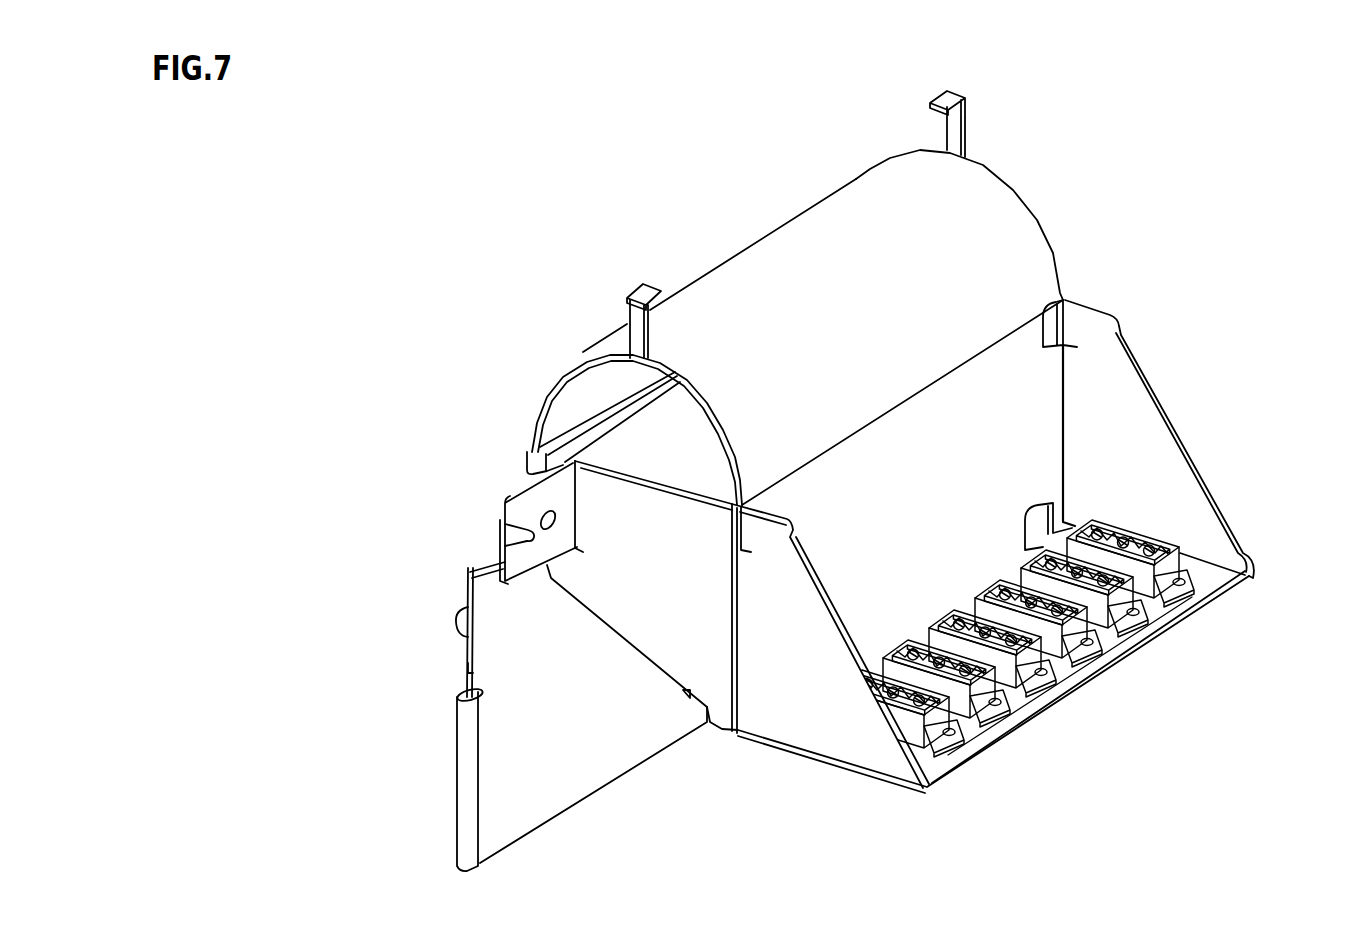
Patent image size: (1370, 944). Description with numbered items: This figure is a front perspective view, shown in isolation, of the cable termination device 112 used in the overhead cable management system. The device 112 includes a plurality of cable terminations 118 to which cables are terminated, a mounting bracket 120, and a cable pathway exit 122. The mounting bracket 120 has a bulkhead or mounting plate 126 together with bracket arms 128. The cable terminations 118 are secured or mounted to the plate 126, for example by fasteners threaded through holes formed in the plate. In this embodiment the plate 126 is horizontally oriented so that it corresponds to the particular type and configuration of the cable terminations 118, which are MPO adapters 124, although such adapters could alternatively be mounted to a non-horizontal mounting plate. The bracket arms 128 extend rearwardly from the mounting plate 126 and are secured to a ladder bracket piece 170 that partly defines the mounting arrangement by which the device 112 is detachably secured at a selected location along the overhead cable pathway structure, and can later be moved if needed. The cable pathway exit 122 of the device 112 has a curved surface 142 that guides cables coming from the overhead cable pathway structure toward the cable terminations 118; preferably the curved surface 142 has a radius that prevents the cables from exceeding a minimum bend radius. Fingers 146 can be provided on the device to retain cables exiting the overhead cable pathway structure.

The cable termination device 112 is at (470, 272).
The cable terminations 118 is at (1140, 418).
The mounting bracket 120 is at (751, 778).
The cable pathway exit 122 is at (988, 210).
The MPO adapters 124 is at (1050, 673).
The mounting plate 126 is at (1220, 586).
The bracket arms 128 is at (633, 620).
The curved surface 142 is at (862, 195).
The fingers 146 is at (633, 318).
The ladder bracket piece 170 is at (563, 770).